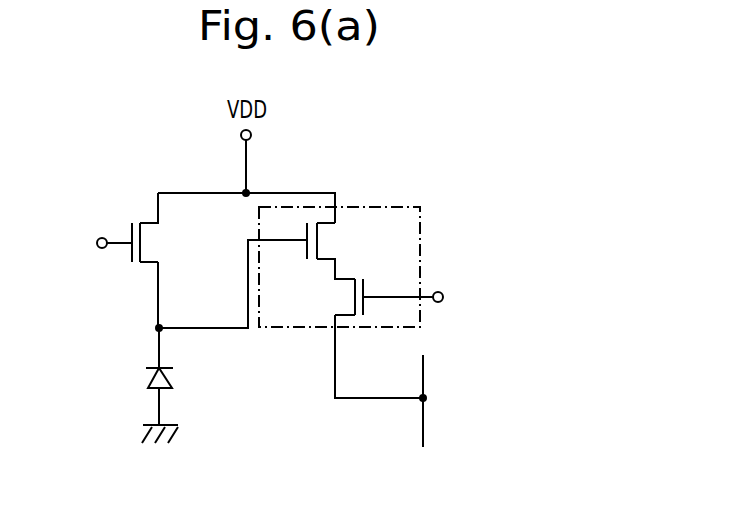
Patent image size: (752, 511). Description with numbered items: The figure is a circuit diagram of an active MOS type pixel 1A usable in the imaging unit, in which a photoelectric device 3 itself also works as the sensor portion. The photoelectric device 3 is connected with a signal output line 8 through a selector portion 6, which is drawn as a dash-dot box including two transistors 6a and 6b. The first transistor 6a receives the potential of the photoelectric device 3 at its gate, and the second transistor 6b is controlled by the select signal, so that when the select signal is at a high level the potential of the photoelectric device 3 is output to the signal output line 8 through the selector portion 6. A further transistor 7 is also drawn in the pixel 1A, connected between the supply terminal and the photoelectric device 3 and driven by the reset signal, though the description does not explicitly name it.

The pixel 1A is at (128, 118).
The reset transistor 7 is at (131, 223).
The selector portion 6 is at (383, 206).
The transistor 6a is at (302, 260).
The transistor 6b is at (363, 279).
The photoelectric device 3 is at (147, 387).
The signal output line 8 is at (425, 419).